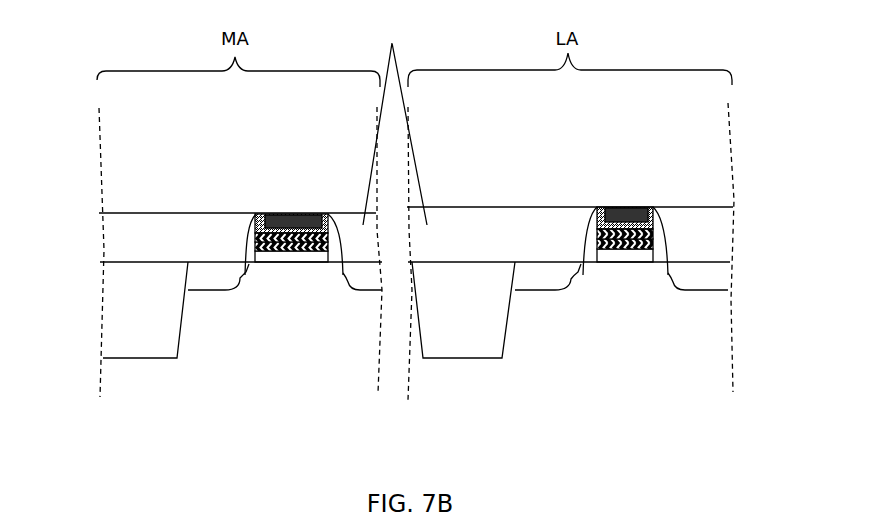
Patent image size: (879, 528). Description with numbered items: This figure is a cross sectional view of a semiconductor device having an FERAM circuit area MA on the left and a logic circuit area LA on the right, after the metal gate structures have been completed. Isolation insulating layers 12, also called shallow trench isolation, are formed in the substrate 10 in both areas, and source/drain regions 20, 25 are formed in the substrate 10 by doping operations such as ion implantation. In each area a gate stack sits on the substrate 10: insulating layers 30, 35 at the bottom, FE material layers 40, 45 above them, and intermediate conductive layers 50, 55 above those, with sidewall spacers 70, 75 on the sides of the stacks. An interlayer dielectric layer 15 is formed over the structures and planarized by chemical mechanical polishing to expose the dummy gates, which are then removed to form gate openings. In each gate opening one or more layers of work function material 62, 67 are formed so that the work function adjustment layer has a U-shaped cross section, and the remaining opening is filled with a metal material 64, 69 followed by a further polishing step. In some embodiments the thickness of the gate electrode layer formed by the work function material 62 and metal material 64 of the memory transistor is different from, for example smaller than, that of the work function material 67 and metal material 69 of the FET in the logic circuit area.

The substrate 10 is at (218, 328).
The isolation insulating layer 12 is at (135, 297).
The interlayer dielectric layer 15 is at (395, 206).
The source/drain region 20 is at (210, 273).
The source/drain region 25 is at (548, 277).
The insulating layer 30 is at (277, 257).
The insulating layer 35 is at (627, 256).
The FE material layer 40 is at (257, 247).
The FE material layer 45 is at (657, 246).
The intermediate conductive layer 50 is at (257, 237).
The intermediate conductive layer 55 is at (655, 236).
The work function material 62 is at (257, 230).
The metal material 64 is at (267, 217).
The work function material 67 is at (651, 226).
The metal material 69 is at (636, 215).
The sidewall spacer 70 is at (336, 252).
The sidewall spacer 75 is at (662, 253).